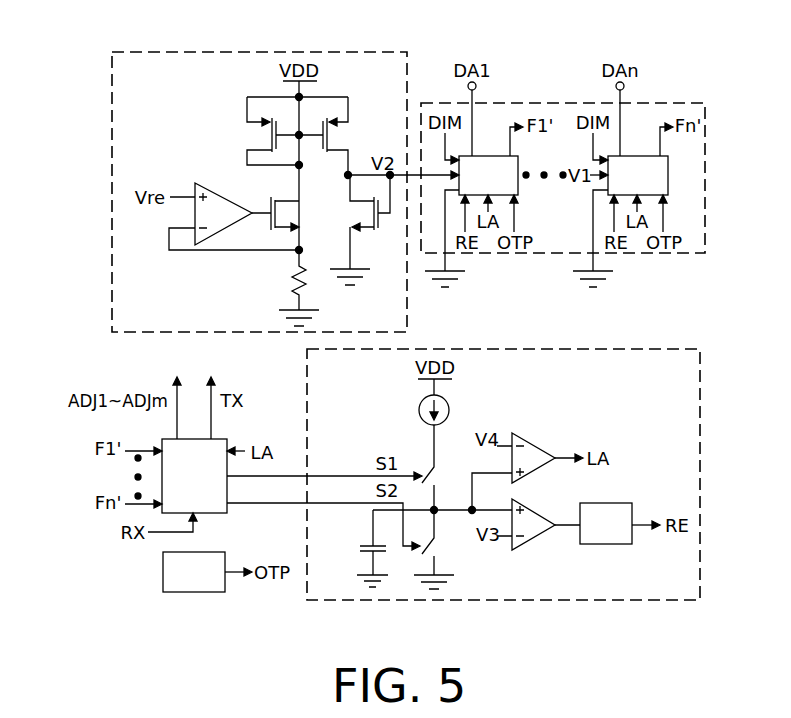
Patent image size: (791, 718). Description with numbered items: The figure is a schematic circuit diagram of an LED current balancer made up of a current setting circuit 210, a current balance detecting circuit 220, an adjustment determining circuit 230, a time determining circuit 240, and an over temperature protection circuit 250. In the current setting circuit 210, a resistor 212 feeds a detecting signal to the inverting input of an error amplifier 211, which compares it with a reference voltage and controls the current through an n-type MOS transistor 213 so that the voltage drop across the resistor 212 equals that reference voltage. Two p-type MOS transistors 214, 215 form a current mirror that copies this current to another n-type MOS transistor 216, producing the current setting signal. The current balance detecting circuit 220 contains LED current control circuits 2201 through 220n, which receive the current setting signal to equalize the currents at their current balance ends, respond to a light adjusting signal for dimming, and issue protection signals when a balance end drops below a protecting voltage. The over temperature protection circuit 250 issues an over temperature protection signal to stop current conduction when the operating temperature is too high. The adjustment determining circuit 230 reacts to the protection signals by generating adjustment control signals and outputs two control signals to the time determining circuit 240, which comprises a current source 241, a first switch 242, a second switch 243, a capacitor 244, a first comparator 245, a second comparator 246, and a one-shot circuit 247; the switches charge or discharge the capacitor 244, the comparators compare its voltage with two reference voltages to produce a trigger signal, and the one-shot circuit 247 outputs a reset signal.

The current setting circuit 210 is at (113, 52).
The error amplifier 211 is at (207, 184).
The resistor 212 is at (293, 290).
The n-type MOS transistor 213 is at (290, 208).
The p-type MOS transistor 214 is at (258, 131).
The p-type MOS transistor 215 is at (343, 131).
The n-type MOS transistor 216 is at (362, 230).
The current balance detecting circuit 220 is at (705, 136).
The LED current control circuit 2201 is at (472, 187).
The LED current control circuit 220n is at (621, 187).
The adjustment determining circuit 230 is at (181, 487).
The time determining circuit 240 is at (618, 351).
The current source 241 is at (450, 410).
The first switch 242 is at (437, 474).
The second switch 243 is at (437, 540).
The capacitor 244 is at (362, 547).
The first comparator 245 is at (533, 447).
The second comparator 246 is at (533, 513).
The one-shot circuit 247 is at (592, 535).
The over temperature protection circuit 250 is at (180, 583).